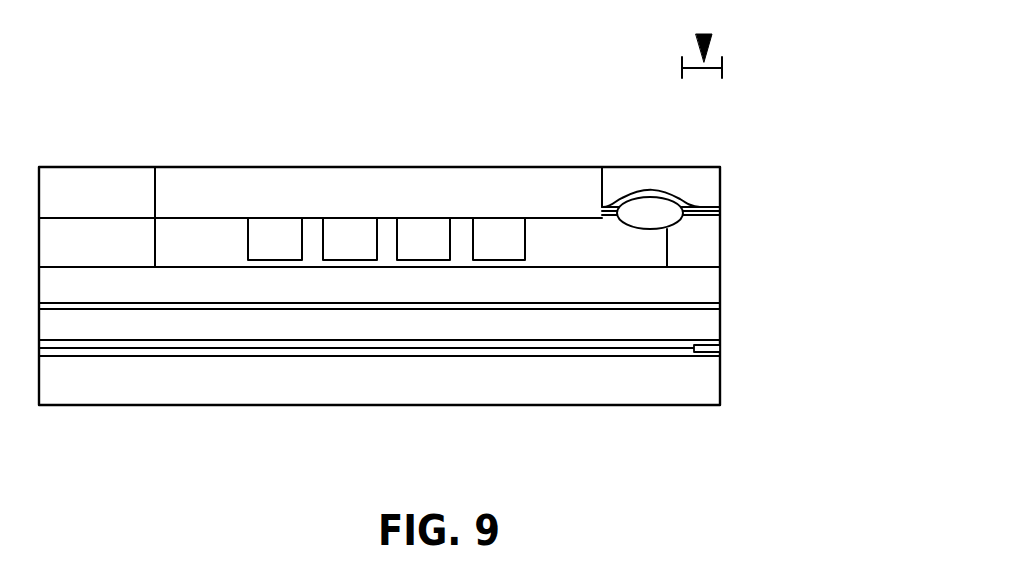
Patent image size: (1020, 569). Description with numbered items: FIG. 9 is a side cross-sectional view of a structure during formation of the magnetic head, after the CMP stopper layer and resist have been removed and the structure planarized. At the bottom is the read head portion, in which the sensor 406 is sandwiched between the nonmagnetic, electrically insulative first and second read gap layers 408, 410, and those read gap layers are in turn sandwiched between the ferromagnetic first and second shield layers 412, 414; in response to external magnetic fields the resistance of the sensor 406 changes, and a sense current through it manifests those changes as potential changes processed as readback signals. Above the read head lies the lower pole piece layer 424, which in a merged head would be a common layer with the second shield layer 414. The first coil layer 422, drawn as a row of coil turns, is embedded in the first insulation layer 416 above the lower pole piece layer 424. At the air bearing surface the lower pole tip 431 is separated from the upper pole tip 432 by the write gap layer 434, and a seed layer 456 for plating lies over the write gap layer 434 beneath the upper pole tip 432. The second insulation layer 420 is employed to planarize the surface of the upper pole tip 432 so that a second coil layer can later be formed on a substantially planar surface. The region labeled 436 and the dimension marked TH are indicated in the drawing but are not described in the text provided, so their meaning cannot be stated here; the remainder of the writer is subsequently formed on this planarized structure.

The sensor 406 is at (720, 347).
The first read gap layer 408 is at (255, 360).
The second read gap layer 410 is at (212, 340).
The first shield layer 412 is at (637, 405).
The second shield layer 414 is at (720, 319).
The first insulation layer 416 is at (181, 260).
The second insulation layer 420 is at (522, 177).
The first coil layer 422 is at (347, 260).
The lower pole piece layer 424 is at (720, 283).
The lower pole tip 431 is at (720, 245).
The upper pole tip 432 is at (720, 175).
The write gap layer 434 is at (720, 215).
The write gap region 436 is at (643, 194).
The seed layer 456 is at (720, 206).
The throat height TH is at (704, 34).